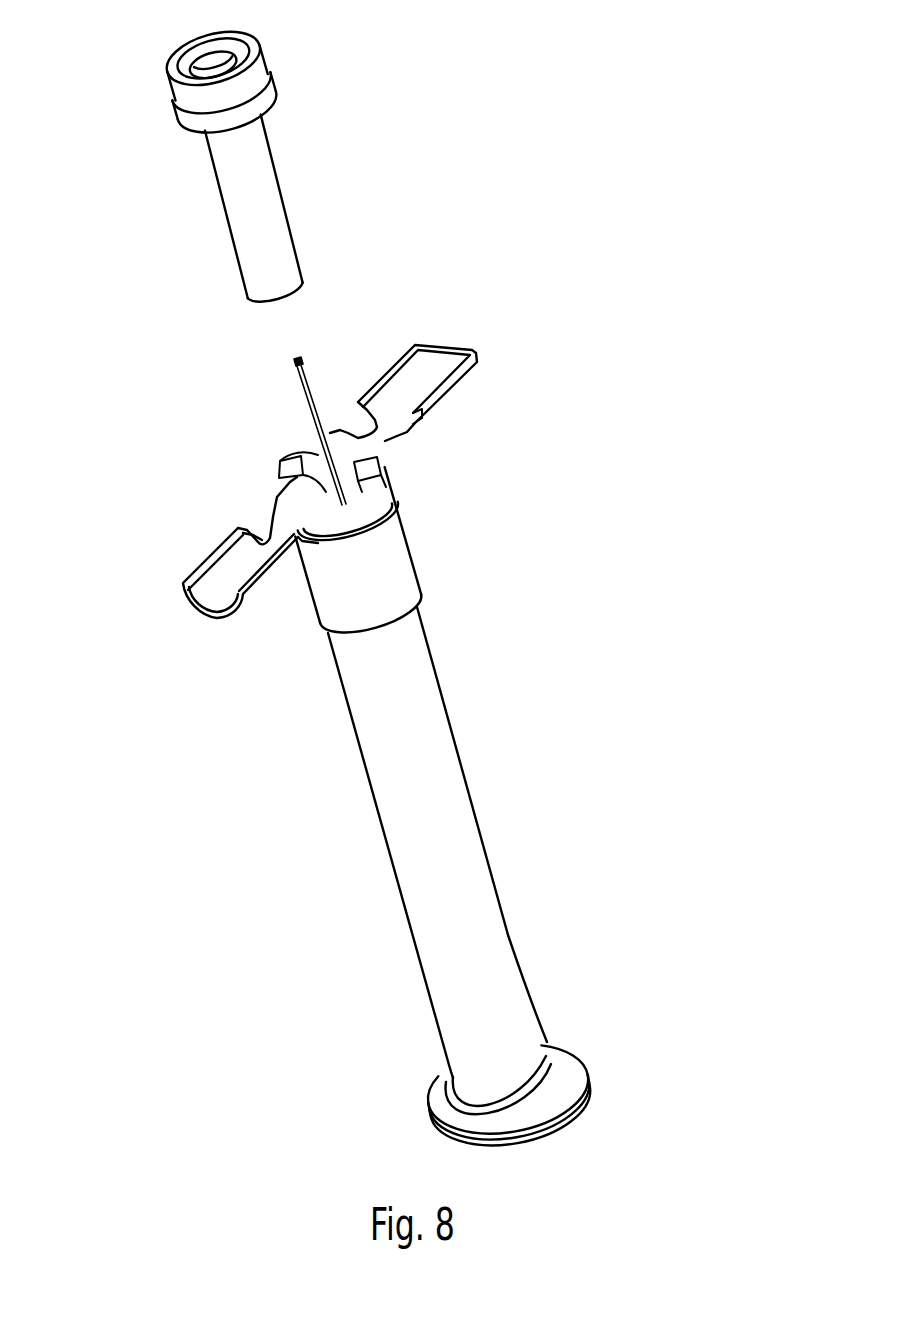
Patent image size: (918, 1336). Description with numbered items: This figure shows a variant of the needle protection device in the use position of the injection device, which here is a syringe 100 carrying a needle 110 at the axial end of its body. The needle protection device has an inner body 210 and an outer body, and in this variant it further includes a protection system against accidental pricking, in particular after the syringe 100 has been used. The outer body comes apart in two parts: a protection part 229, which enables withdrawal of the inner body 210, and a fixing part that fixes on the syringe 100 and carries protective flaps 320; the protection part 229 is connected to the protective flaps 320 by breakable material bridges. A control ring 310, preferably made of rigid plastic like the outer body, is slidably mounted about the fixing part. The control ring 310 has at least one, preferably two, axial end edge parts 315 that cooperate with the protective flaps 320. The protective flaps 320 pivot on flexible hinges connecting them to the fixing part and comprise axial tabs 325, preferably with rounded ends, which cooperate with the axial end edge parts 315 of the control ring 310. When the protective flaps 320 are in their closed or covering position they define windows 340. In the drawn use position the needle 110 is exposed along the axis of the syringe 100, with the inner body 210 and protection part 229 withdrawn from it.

The syringe 100 is at (468, 825).
The needle 110 is at (300, 395).
The inner body 210 is at (283, 237).
The protection part 229 is at (263, 64).
The control ring 310 is at (382, 568).
The axial end edge part 315 is at (377, 484).
The protective flaps 320 is at (415, 392).
The axial tabs 325 is at (312, 448).
The windows 340 is at (257, 518).